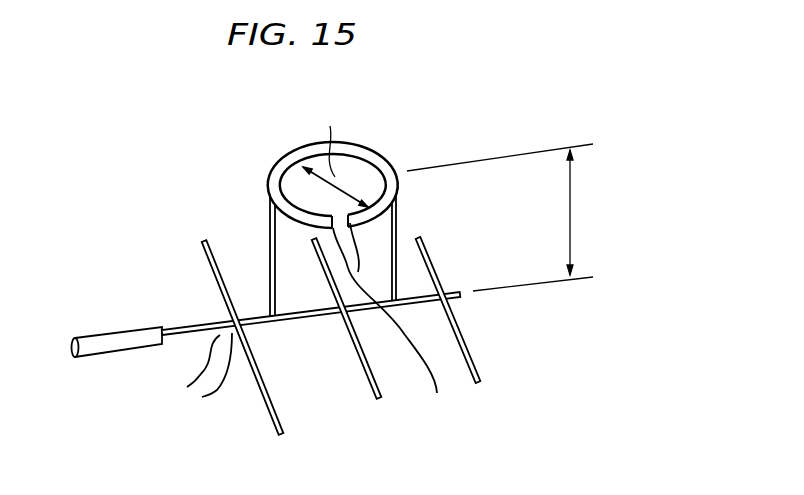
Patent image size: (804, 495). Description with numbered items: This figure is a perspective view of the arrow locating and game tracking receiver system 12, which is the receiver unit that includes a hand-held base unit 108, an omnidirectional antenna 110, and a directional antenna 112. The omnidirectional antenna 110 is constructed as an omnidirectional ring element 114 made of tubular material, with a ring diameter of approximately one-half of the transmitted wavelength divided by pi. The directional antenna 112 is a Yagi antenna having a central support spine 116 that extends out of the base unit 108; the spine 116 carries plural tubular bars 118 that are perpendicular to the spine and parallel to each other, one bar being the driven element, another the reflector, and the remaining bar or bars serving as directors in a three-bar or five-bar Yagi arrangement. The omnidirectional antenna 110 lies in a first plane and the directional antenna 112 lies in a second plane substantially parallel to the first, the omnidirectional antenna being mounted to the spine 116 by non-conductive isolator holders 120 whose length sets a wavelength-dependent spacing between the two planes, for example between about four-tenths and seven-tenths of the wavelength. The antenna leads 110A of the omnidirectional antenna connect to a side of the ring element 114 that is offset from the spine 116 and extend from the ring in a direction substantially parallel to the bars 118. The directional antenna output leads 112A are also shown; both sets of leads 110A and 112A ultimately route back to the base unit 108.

The arrow locating and game tracking receiver system 12 is at (175, 187).
The hand-held base unit 108 is at (116, 340).
The omnidirectional antenna 110 is at (407, 153).
The antenna leads 110A is at (394, 324).
The directional antenna 112 is at (462, 304).
The directional antenna output leads 112A is at (192, 397).
The omnidirectional ring element 114 is at (273, 171).
The central support spine 116 is at (298, 319).
The tubular bars 118 is at (278, 415).
The isolator holders 120 is at (270, 226).